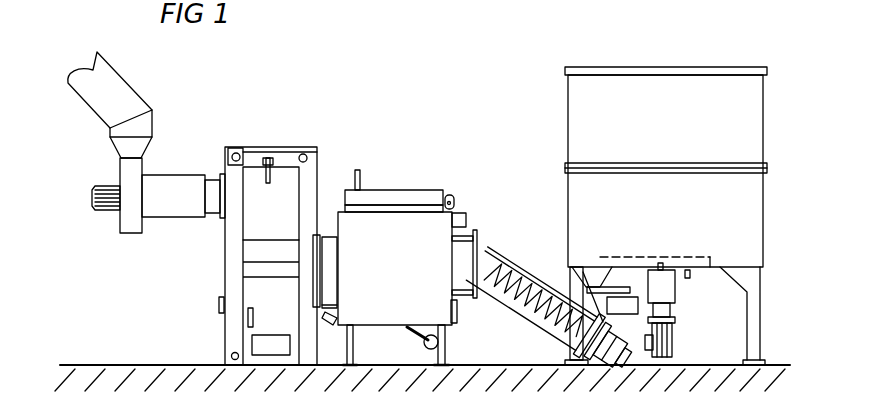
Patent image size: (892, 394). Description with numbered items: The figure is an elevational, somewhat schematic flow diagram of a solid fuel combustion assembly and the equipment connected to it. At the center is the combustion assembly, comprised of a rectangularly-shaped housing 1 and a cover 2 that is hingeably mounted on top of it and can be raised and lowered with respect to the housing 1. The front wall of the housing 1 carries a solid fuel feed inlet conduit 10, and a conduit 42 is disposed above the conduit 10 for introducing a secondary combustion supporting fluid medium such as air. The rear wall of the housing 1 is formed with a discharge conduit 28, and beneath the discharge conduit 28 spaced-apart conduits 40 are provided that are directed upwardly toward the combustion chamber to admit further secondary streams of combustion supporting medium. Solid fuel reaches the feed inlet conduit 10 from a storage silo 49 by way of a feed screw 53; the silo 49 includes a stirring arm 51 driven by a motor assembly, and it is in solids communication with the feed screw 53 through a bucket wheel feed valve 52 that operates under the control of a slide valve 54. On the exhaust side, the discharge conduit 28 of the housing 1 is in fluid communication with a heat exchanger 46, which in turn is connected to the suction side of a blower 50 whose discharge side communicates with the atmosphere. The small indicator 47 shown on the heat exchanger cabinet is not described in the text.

The housing 1 is at (375, 288).
The cover 2 is at (385, 197).
The solid fuel feed inlet conduit 10 is at (464, 278).
The discharge conduit 28 is at (332, 243).
The conduits 40 is at (335, 320).
The conduit 42 is at (461, 212).
The heat exchanger 46 is at (307, 175).
The indicator lamp 47 is at (237, 150).
The storage silo 49 is at (580, 195).
The blower 50 is at (130, 222).
The stirring arm 51 is at (652, 262).
The bucket wheel feed valve 52 is at (604, 285).
The feed screw 53 is at (518, 303).
The slide valve 54 is at (570, 266).